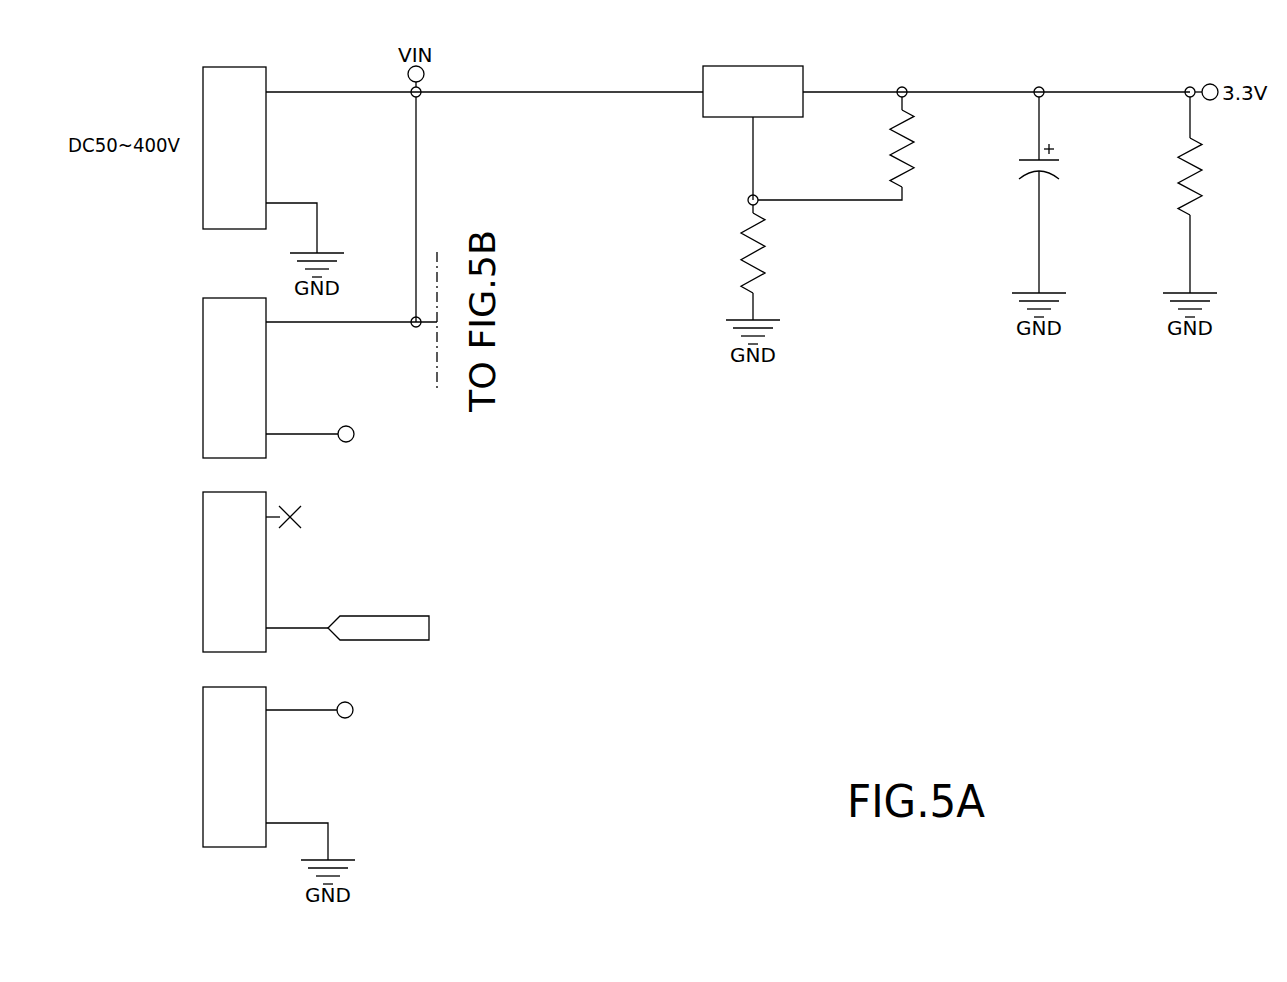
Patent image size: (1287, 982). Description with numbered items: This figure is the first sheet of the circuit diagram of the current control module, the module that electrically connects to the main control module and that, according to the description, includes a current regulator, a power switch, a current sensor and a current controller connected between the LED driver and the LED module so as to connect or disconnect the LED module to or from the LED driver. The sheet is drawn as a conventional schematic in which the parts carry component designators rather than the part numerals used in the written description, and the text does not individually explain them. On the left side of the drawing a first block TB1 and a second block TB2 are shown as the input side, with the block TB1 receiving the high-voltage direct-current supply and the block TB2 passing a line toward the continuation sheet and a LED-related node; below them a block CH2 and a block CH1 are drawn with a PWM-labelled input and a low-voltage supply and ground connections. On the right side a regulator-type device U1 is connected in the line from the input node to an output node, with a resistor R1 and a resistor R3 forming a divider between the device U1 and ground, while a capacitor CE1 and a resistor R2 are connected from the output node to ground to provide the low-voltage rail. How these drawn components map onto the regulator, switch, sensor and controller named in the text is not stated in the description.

The terminal block TB1 (DC 50~400V input) TB1 is at (452, 170).
The terminal block TB2 is at (319, 365).
The channel connector CH2 is at (316, 559).
The channel connector CH1 is at (303, 784).
The voltage regulator LR8 U1 is at (756, 109).
The resistor R1 is at (856, 143).
The resistor R2 is at (1203, 213).
The resistor R3 is at (767, 286).
The electrolytic capacitor CE1 is at (1059, 213).